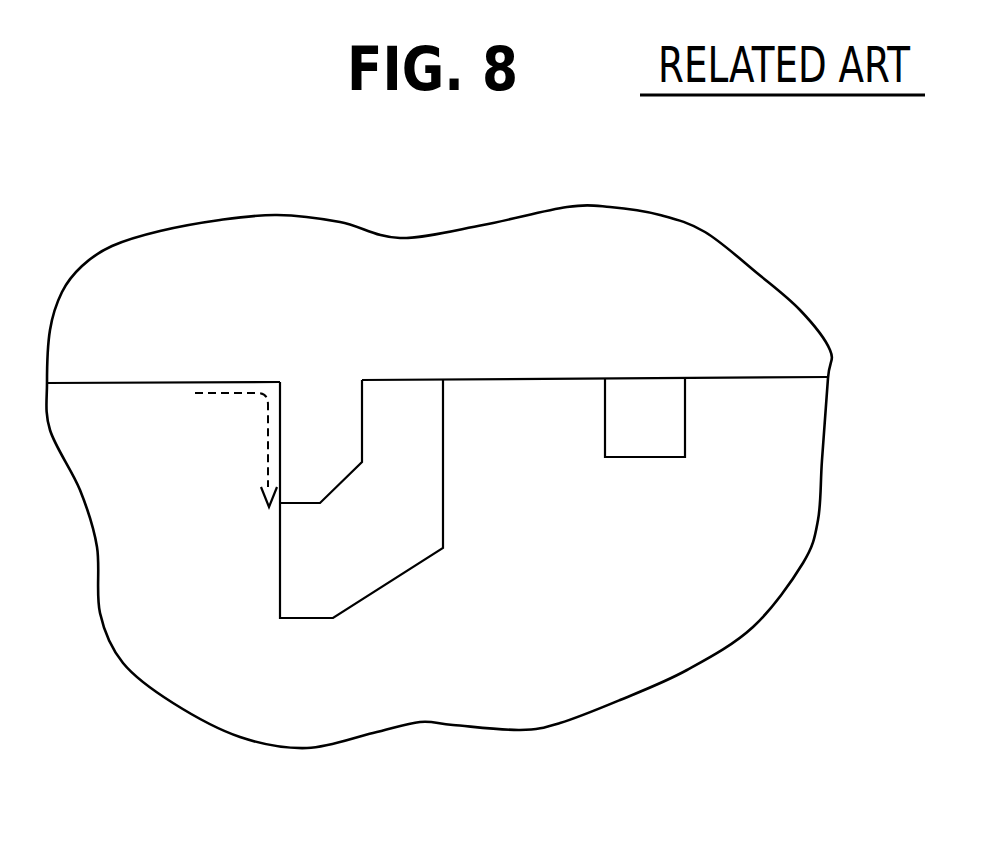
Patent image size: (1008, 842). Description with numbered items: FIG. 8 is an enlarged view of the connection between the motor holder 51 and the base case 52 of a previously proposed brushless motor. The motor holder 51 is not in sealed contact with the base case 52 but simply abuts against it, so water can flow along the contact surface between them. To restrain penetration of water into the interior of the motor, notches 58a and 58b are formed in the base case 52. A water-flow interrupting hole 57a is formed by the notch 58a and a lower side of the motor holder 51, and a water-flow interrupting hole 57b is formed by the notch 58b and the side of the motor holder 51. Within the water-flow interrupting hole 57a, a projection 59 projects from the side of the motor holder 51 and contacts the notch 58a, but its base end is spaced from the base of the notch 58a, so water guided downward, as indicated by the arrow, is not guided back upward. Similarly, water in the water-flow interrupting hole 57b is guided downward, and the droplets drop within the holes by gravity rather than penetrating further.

The motor holder 51 is at (745, 295).
The base case 52 is at (783, 530).
The water-flow interrupting hole 57a is at (442, 530).
The water-flow interrupting hole 57b is at (685, 437).
The notch 58a is at (280, 594).
The notch 58b is at (605, 435).
The projection 59 is at (335, 467).